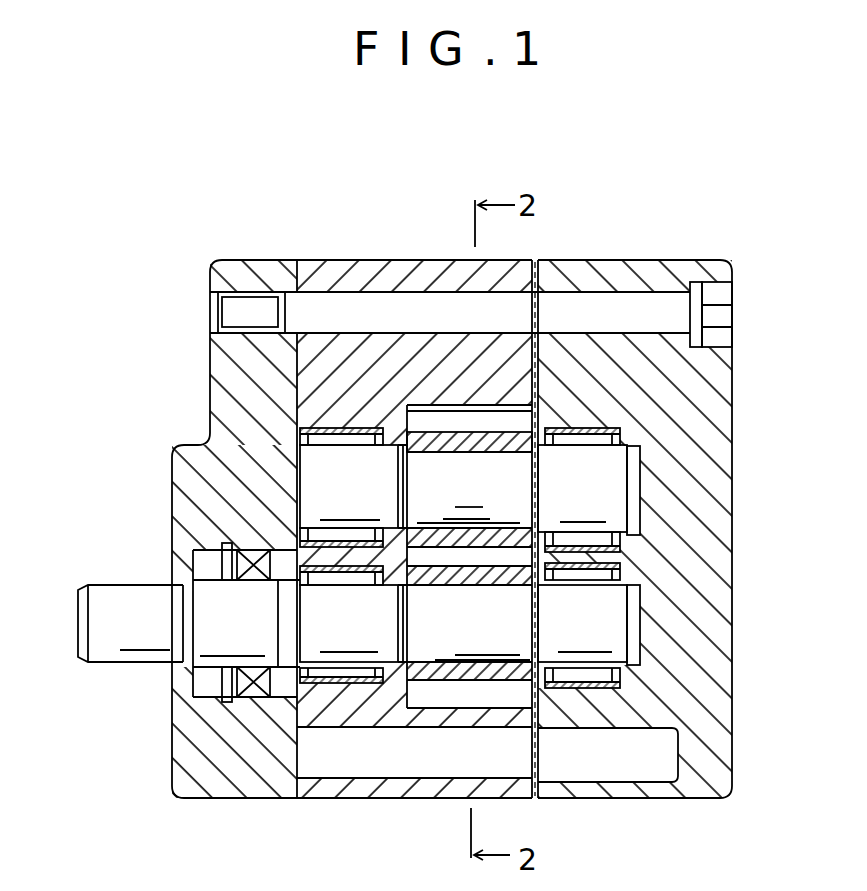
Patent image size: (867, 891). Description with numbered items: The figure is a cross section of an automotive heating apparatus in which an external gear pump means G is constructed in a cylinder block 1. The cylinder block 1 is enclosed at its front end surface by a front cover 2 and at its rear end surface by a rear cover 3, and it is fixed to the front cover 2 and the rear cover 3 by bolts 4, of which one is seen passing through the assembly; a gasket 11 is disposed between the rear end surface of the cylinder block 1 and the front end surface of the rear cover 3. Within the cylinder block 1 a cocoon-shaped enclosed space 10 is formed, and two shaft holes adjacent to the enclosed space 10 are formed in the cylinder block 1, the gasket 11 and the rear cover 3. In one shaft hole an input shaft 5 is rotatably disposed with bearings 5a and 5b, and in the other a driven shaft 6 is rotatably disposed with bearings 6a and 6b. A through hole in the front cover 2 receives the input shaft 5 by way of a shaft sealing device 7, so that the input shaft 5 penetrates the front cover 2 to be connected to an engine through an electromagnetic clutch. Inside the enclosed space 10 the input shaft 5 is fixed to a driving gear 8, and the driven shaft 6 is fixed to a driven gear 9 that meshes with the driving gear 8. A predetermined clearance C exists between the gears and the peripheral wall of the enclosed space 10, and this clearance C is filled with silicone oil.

The cylinder block 1 is at (331, 275).
The front cover 2 is at (255, 277).
The rear cover 3 is at (628, 284).
The bolt 4 is at (568, 310).
The input shaft 5 is at (100, 622).
The bearing 5a is at (345, 668).
The bearing 5b is at (585, 674).
The driven shaft 6 is at (320, 488).
The bearing 6a is at (342, 438).
The bearing 6b is at (588, 440).
The shaft sealing device 7 is at (253, 690).
The driving gear 8 is at (447, 673).
The driven gear 9 is at (463, 445).
The enclosed space 10 is at (414, 416).
The gasket 11 is at (536, 264).
The clearance C is at (500, 405).
The external gear pump means G is at (468, 488).